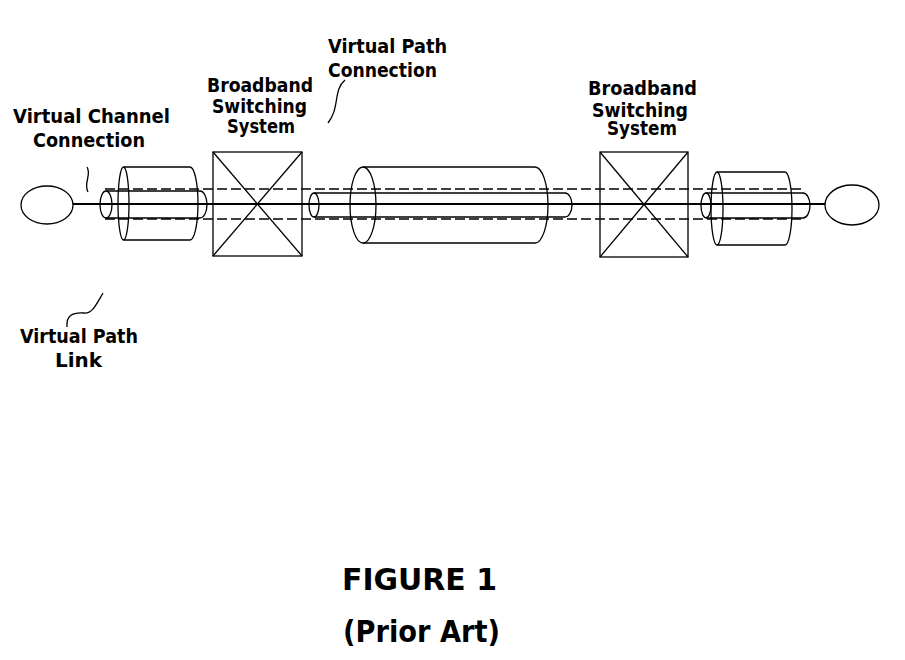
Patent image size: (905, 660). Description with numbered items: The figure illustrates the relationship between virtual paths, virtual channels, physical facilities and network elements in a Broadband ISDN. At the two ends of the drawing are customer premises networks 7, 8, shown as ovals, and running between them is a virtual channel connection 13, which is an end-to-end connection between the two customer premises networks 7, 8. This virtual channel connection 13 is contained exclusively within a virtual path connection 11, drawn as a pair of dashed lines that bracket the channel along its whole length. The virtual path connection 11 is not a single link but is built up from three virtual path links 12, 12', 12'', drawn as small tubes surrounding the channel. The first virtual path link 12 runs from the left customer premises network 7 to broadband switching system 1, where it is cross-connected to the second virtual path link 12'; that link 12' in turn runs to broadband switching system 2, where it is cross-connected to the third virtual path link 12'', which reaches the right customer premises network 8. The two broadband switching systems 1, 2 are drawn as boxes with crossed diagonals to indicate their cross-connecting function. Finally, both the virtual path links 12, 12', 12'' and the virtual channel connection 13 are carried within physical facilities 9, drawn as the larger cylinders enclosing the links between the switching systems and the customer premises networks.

The broadband switching system 1 is at (253, 258).
The broadband switching system 2 is at (648, 258).
The customer premises network 7 is at (32, 227).
The customer premises network 8 is at (870, 220).
The physical facilities 9 is at (147, 243).
The virtual path connection 11 is at (200, 182).
The virtual path link 12 is at (153, 243).
The virtual path link 12' is at (440, 255).
The virtual path link 12'' is at (764, 168).
The virtual channel connection 13 is at (89, 208).